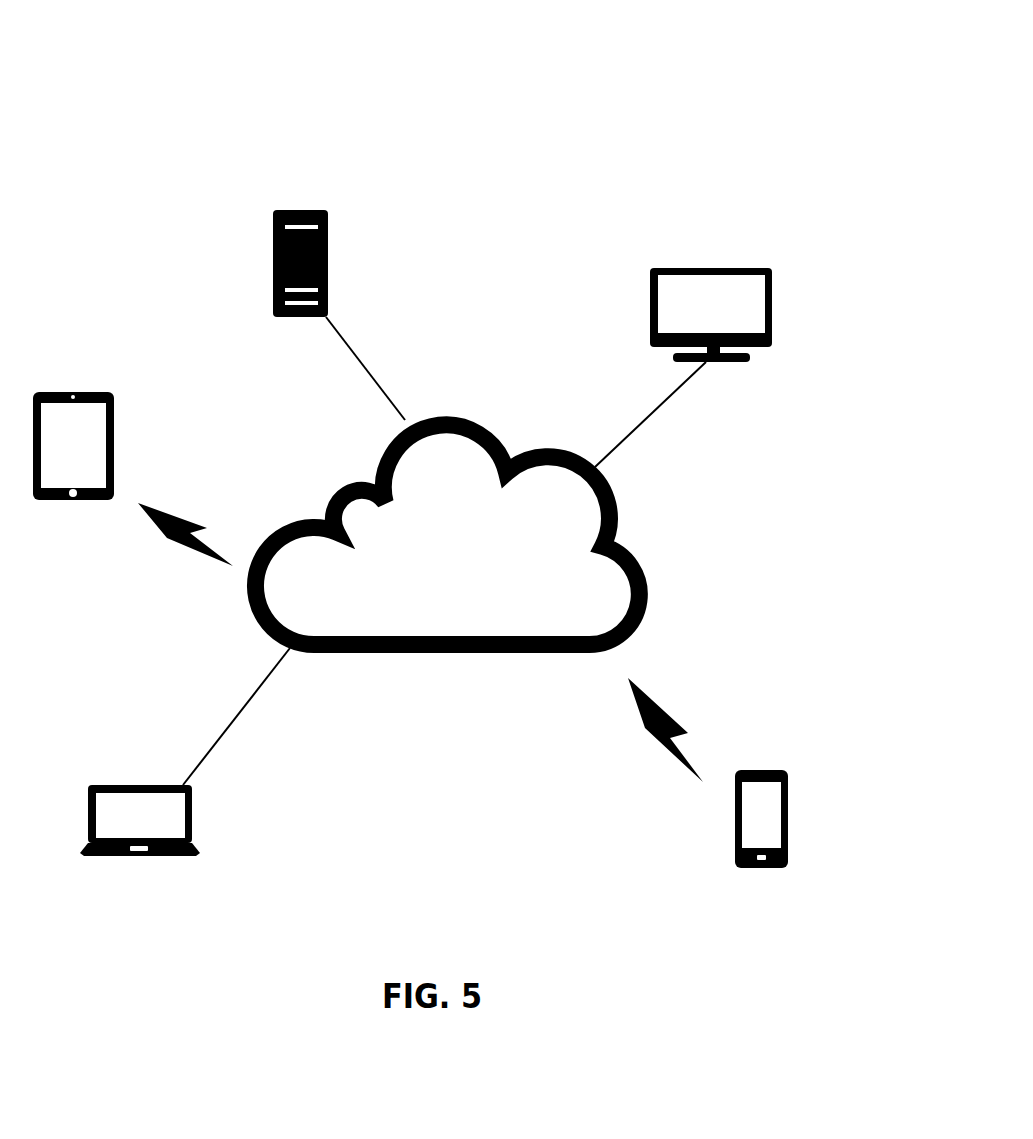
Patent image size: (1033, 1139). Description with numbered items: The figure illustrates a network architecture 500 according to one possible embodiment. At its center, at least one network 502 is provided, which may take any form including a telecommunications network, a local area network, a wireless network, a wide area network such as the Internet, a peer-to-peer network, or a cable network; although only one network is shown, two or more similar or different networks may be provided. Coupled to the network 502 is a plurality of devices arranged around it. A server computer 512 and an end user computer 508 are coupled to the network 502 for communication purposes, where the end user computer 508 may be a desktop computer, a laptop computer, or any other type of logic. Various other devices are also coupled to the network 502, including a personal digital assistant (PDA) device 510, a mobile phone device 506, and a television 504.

The network architecture 500 is at (77, 87).
The network 502 is at (458, 654).
The television 504 is at (717, 268).
The mobile phone device 506 is at (753, 770).
The end user computer 508 is at (135, 785).
The personal digital assistant (PDA) device 510 is at (75, 392).
The server computer 512 is at (300, 210).